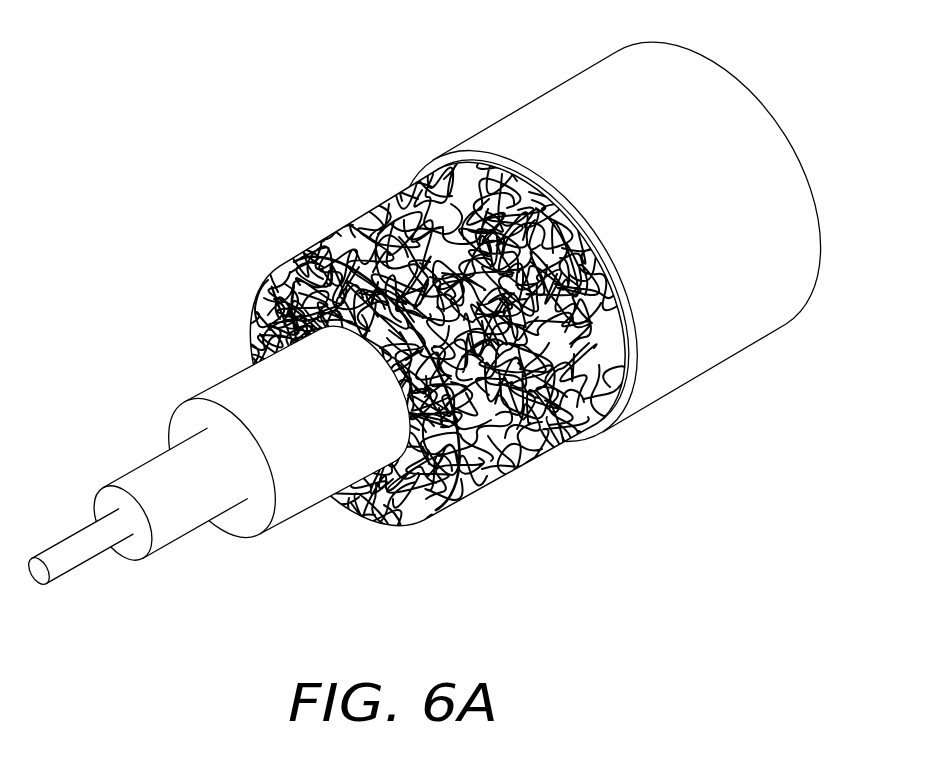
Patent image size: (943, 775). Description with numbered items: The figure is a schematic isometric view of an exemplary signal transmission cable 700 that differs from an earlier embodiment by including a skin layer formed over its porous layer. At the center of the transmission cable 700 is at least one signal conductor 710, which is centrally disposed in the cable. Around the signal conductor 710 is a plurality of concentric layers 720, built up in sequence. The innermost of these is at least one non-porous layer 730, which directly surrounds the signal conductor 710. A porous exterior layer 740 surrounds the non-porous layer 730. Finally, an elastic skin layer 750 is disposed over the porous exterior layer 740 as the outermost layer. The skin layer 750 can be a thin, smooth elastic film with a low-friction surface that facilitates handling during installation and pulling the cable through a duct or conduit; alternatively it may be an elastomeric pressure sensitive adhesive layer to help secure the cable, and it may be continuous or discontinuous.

The transmission cable 700 is at (166, 198).
The signal conductor 710 is at (278, 538).
The plurality of concentric layers 720 is at (347, 613).
The non-porous layer 730 is at (230, 393).
The porous exterior layer 740 is at (363, 227).
The elastic skin layer 750 is at (540, 123).